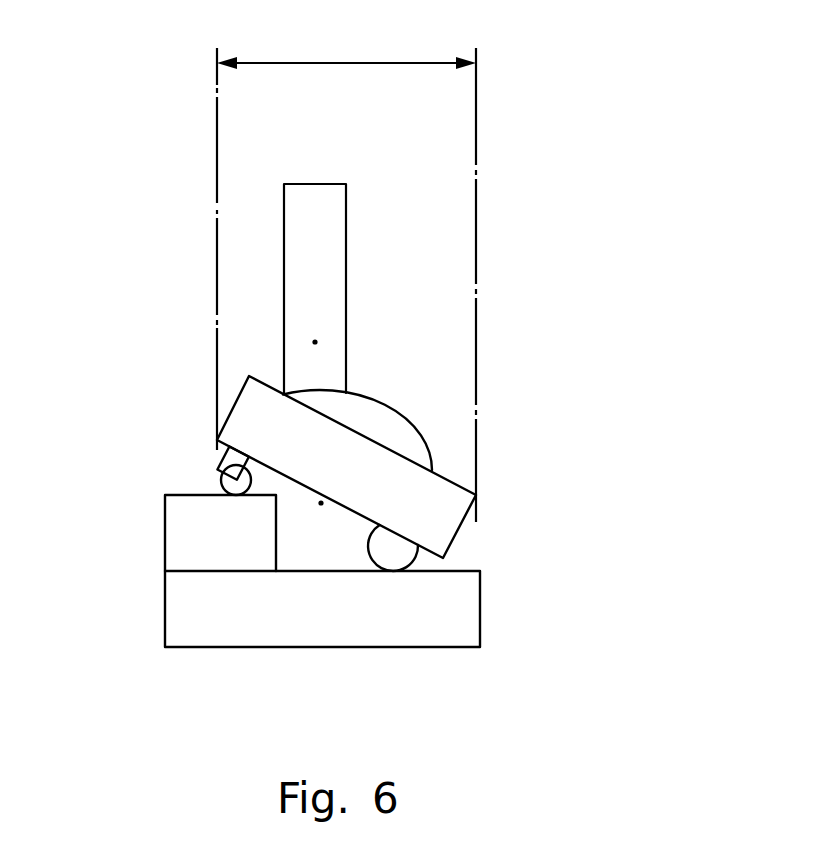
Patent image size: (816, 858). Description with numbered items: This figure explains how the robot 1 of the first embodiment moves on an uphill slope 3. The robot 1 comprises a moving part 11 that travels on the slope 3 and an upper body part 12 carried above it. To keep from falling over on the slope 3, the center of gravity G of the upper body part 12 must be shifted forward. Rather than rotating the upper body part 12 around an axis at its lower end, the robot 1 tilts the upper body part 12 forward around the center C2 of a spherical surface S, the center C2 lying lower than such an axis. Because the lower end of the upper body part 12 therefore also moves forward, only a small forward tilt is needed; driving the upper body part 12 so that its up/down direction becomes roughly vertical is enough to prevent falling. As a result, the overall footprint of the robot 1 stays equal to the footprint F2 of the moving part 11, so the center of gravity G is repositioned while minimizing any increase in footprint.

The robot 1 is at (351, 150).
The uphill slope 3 is at (124, 580).
The moving part 11 is at (437, 468).
The upper body part 12 is at (346, 224).
The spherical surface S is at (388, 405).
The center of gravity G is at (315, 342).
The center of the spherical surface C2 is at (321, 503).
The footprint of the moving part F2 is at (346, 46).